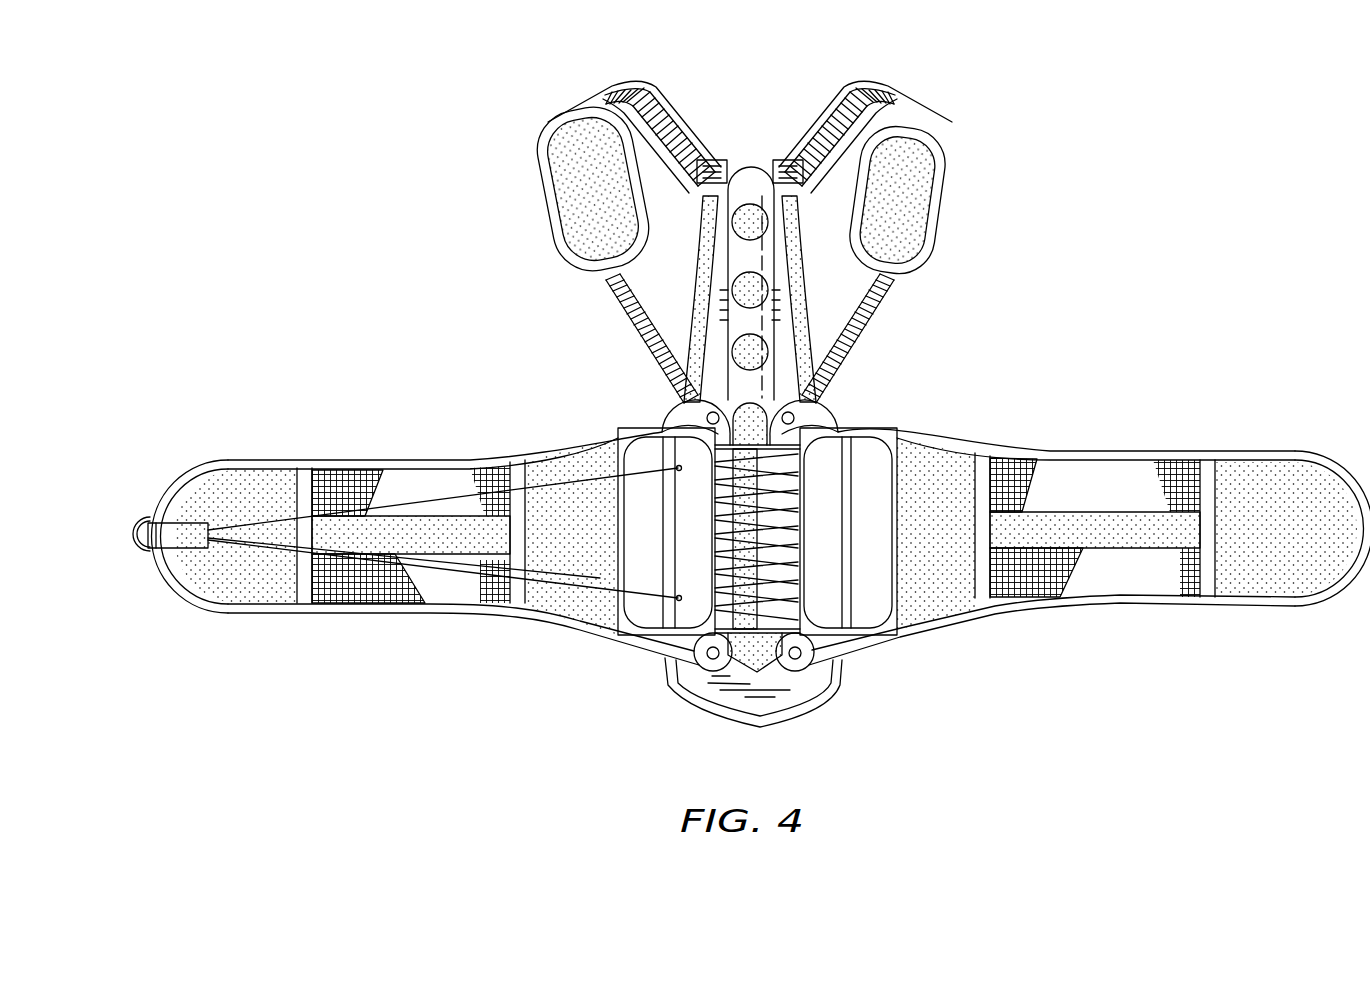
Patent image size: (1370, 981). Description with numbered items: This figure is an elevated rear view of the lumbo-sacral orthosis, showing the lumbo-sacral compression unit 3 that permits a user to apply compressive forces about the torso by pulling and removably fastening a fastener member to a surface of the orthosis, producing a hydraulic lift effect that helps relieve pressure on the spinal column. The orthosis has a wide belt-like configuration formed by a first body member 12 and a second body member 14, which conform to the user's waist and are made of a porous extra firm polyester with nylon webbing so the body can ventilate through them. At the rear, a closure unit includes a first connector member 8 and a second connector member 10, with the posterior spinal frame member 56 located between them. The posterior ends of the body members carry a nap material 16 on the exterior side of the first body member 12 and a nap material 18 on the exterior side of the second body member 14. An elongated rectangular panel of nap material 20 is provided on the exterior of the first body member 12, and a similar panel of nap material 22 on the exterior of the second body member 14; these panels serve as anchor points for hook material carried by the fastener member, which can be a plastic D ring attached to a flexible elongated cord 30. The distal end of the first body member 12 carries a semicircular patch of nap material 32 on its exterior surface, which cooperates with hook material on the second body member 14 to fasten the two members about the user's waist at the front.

The lumbo-sacral compression unit 3 is at (1026, 372).
The first connector member 8 is at (642, 446).
The second connector member 10 is at (860, 450).
The first body member 12 is at (1143, 578).
The second body member 14 is at (338, 600).
The nap material 16 is at (942, 612).
The nap material 18 is at (572, 605).
The panel of nap material 20 is at (1118, 515).
The panel of nap material 22 is at (404, 527).
The flexible elongated cord 30 is at (441, 495).
The semicircular patch of nap material 32 is at (1316, 580).
The posterior spinal frame member 56 is at (746, 175).